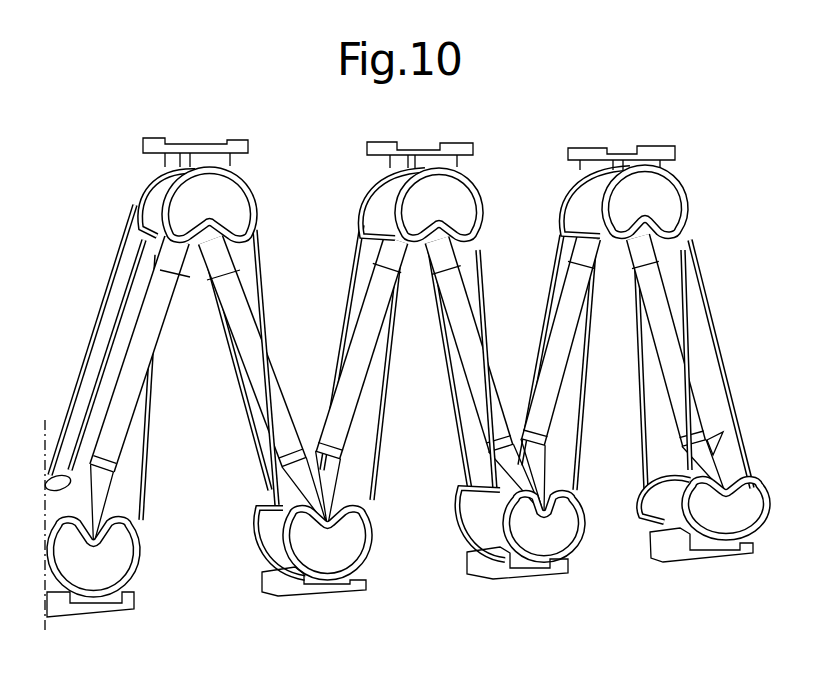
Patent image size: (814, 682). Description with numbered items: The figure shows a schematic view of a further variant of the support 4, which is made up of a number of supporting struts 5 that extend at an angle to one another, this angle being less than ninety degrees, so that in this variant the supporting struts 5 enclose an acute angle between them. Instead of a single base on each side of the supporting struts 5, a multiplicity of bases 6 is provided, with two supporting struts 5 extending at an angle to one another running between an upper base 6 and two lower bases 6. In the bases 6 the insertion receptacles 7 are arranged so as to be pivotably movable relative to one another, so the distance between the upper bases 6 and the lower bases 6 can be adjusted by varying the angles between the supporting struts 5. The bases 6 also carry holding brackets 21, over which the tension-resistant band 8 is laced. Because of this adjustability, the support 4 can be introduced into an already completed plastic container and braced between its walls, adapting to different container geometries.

The support 4 is at (66, 264).
The supporting struts 5 is at (347, 408).
The bases 6 is at (422, 148).
The insertion receptacles 7 is at (705, 472).
The tension-resistant band 8 is at (717, 353).
The holding brackets 21 is at (764, 518).